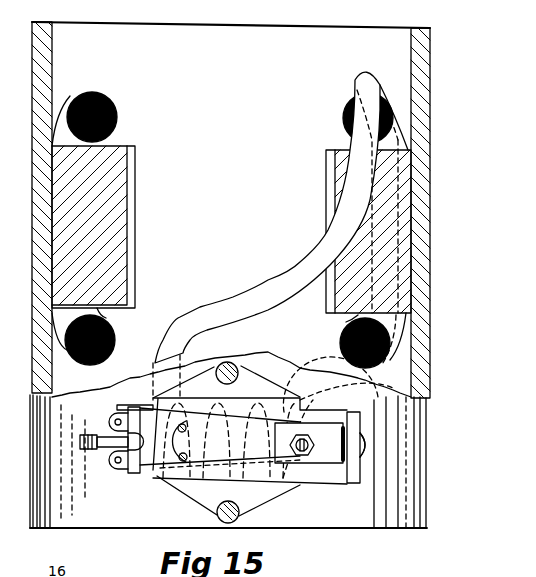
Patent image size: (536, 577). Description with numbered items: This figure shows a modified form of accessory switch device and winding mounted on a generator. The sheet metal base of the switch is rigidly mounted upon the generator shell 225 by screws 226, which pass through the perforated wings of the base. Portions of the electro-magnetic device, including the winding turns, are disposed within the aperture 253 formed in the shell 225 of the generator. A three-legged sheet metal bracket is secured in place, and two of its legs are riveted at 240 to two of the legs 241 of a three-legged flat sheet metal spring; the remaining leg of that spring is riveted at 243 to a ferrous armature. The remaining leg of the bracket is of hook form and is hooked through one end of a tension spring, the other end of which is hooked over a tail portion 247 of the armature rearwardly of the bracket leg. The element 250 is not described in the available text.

The generator shell 225 is at (417, 348).
The screws 226 is at (246, 518).
The rivets 240 is at (116, 468).
The legs of the spring 241 is at (122, 474).
The rivet 243 is at (220, 438).
The tail portion of the armature 247 is at (106, 449).
The actuator 250 is at (325, 570).
The aperture 253 is at (323, 472).